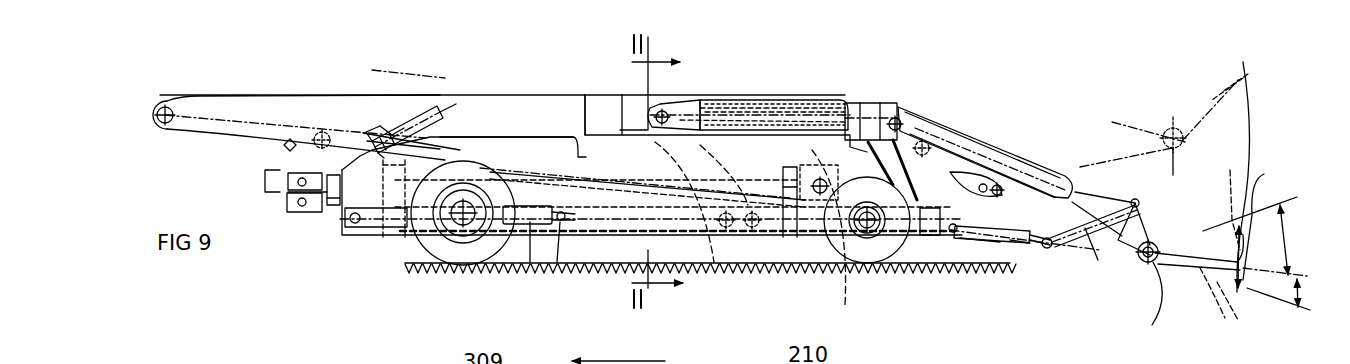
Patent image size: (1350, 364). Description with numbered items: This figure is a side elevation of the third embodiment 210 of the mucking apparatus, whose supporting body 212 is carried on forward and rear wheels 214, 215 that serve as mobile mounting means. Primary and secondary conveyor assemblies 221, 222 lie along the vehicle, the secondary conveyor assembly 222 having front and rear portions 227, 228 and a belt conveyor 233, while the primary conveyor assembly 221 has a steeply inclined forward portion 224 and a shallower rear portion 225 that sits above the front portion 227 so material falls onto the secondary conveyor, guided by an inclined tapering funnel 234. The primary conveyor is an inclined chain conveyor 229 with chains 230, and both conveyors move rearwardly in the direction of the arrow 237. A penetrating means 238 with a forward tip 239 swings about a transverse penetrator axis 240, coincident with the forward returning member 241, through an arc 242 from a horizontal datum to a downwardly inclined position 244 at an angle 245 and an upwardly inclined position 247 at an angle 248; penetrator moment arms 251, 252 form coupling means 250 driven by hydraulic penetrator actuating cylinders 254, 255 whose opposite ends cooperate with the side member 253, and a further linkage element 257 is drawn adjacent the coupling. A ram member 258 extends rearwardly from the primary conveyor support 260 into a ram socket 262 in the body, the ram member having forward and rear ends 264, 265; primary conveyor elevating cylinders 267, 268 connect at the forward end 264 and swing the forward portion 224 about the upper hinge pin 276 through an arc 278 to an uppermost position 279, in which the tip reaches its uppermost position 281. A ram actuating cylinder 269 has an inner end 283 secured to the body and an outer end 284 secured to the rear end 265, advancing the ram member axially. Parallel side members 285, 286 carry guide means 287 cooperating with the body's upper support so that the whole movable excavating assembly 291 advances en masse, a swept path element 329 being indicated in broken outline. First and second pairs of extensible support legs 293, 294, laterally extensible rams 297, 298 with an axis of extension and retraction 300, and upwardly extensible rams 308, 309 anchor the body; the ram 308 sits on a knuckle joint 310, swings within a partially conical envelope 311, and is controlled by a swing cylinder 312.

The third embodiment 210 is at (983, 130).
The supporting body 212 is at (562, 262).
The forward wheels 214 is at (922, 265).
The rear wheels 215 is at (483, 262).
The primary conveyor assembly 221 is at (983, 180).
The secondary conveyor assembly 222 is at (511, 92).
The forward portion of primary conveyor assembly 224 is at (1037, 162).
The rear portion of primary conveyor assembly 225 is at (749, 101).
The front portion of secondary conveyor assembly 227 is at (757, 170).
The rear portion of secondary conveyor assembly 228 is at (255, 108).
The inclined chain conveyor 229 is at (1070, 178).
The chains 230 is at (1148, 132).
The belt conveyor 233 is at (263, 115).
The inclined tapering funnel 234 is at (618, 112).
The arrow 237 is at (905, 35).
The penetrating means 238 is at (1193, 282).
The forward tip 239 is at (1199, 257).
The transverse penetrator axis 240 is at (1139, 291).
The forward returning member 241 is at (1155, 232).
The arc 242 is at (1272, 221).
The downwardly inclined position 244 is at (1263, 305).
The angle 245 is at (1308, 296).
The upwardly inclined position 247 is at (1172, 180).
The angle 248 is at (1283, 227).
The coupling means 250 is at (1005, 323).
The penetrator moment arm 251 is at (1097, 230).
The penetrator moment arm 252 is at (1094, 226).
The side member 253 is at (1045, 108).
The hydraulic penetrator actuating cylinder 254 is at (1091, 244).
The hydraulic penetrator actuating cylinder 255 is at (1108, 353).
The linkage 257 is at (1100, 322).
The ram member 258 is at (1013, 247).
The primary conveyor support 260 is at (872, 163).
The ram socket 262 is at (712, 180).
The forward end of ram member 264 is at (1020, 241).
The rear end of ram member 265 is at (555, 233).
The primary conveyor elevating cylinder 267 is at (963, 301).
The primary conveyor elevating cylinder 268 is at (980, 240).
The ram actuating cylinder 269 is at (530, 262).
The upper hinge pin 276 is at (905, 110).
The arc 278 is at (1182, 145).
The uppermost position 279 is at (1133, 120).
The uppermost position of tip 281 is at (1243, 78).
The inner end of ram actuating cylinder 283 is at (372, 222).
The outer end of ram actuating cylinder 284 is at (572, 232).
The side member 285 is at (807, 97).
The side member 286 is at (870, 121).
The guide means 287 is at (735, 78).
The movable excavating assembly 291 is at (982, 145).
The first pair of extensible support legs 293 is at (800, 235).
The second pair of extensible support legs 294 is at (393, 243).
The laterally extensible ram 297 is at (285, 202).
The laterally extensible ram 298 is at (278, 180).
The axis of extension and retraction 300 is at (293, 362).
The upwardly extensible ram 308 is at (448, 112).
The upwardly extensible ram 309 is at (387, 141).
The knuckle joint 310 is at (455, 150).
The partially conical envelope 311 is at (372, 70).
The swing cylinder 312 is at (390, 133).
The arc of movement 329 is at (720, 190).